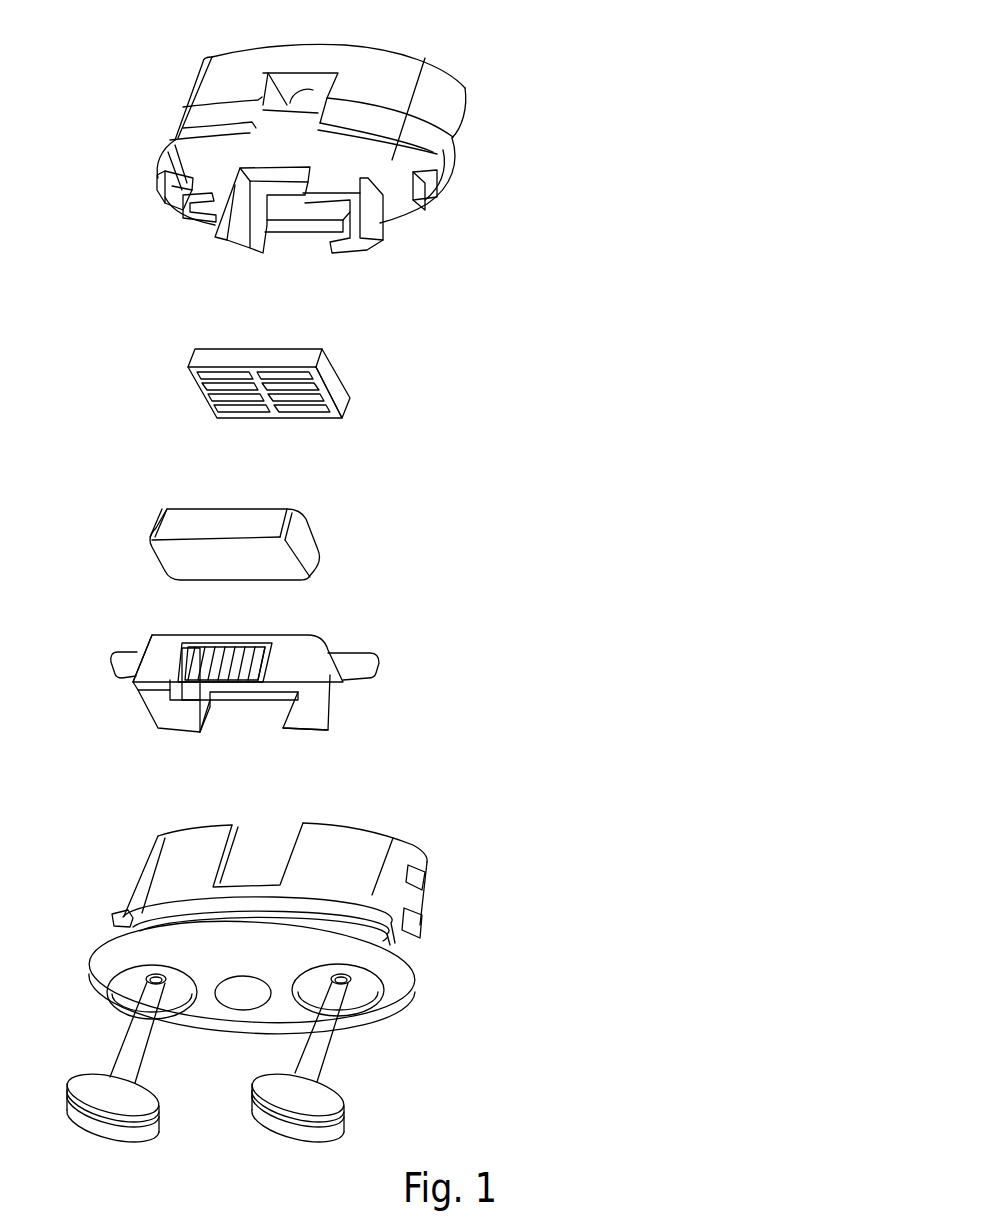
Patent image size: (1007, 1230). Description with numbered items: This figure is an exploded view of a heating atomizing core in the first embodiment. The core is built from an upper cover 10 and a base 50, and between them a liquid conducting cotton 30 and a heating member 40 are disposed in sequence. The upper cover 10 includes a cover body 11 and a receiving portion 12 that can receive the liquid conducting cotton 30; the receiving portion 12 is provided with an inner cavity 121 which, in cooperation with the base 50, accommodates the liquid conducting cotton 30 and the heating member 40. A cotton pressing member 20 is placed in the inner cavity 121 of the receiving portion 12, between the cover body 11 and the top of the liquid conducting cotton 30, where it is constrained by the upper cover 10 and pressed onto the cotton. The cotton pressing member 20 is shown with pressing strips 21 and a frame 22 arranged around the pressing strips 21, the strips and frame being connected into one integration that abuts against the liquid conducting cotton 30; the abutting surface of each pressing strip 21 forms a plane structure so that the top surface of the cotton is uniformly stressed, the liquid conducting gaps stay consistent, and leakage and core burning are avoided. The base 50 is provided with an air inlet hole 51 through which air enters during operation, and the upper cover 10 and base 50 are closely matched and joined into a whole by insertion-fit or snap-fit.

The upper cover 10 is at (723, 33).
The cover body 11 is at (437, 87).
The receiving portion 12 is at (407, 163).
The inner cavity 121 is at (270, 202).
The cotton pressing member 20 is at (728, 265).
The pressing strip 21 is at (312, 405).
The frame 22 is at (302, 345).
The liquid conducting cotton 30 is at (318, 552).
The heating member 40 is at (343, 687).
The base 50 is at (372, 895).
The air inlet hole 51 is at (252, 1002).